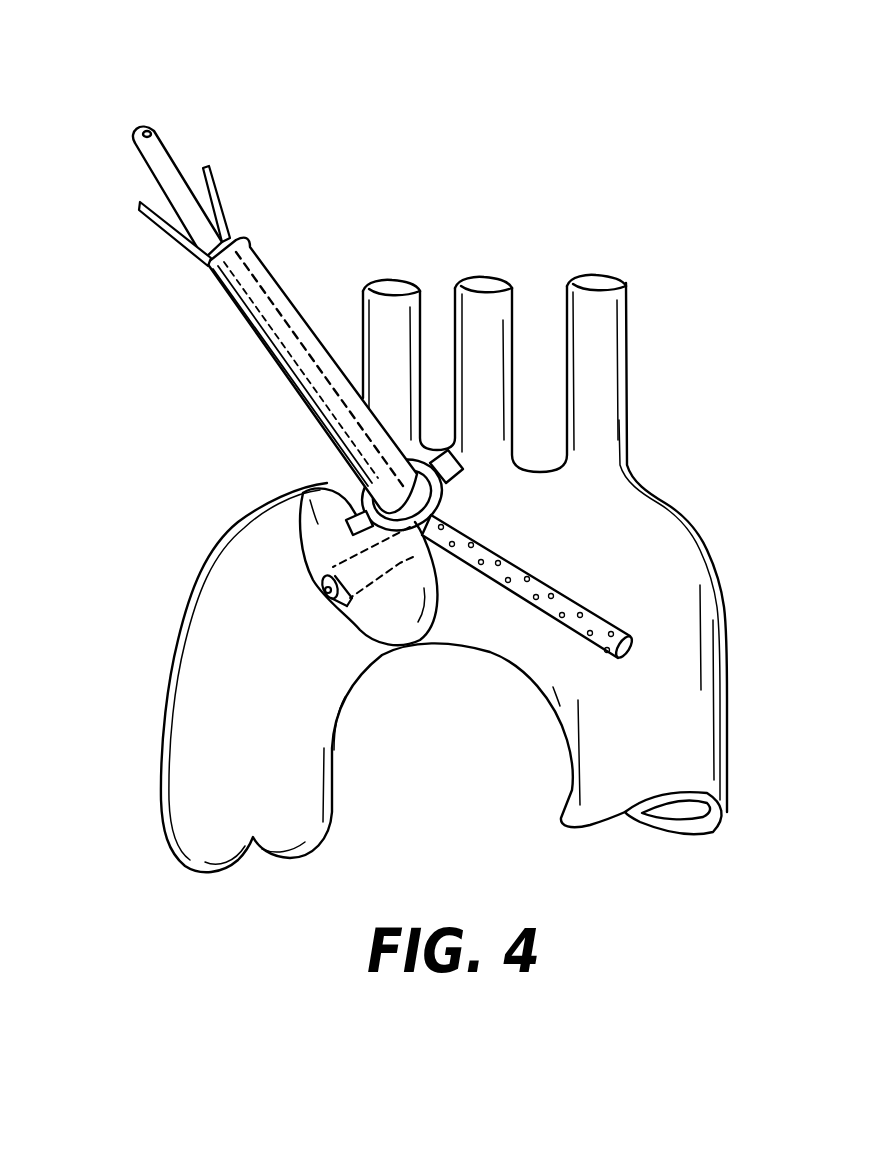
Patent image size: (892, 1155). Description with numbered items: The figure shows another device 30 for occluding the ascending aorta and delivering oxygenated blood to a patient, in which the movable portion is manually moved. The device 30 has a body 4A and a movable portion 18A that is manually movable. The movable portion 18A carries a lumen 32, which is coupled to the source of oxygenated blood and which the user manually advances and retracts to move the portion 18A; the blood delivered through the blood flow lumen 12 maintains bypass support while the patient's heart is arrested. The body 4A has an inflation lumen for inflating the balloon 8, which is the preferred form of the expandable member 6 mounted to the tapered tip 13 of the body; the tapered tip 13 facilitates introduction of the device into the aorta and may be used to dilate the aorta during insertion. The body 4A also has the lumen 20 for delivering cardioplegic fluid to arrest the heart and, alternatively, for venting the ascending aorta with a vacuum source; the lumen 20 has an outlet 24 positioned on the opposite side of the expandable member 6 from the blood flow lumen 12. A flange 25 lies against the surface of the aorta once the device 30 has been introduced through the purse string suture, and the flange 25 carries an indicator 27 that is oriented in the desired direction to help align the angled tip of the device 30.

The expandable member 6 is at (384, 652).
The inflatable balloon 8 is at (432, 640).
The blood flow lumen 12 is at (158, 213).
The tapered tip 13 is at (330, 551).
The movable portion 18A is at (563, 593).
The lumen 20 is at (212, 186).
The outlet 24 is at (325, 592).
The flange 25 is at (460, 484).
The indicator 27 is at (350, 518).
The device 30 is at (295, 268).
The lumen 32 is at (158, 147).
The body 4A is at (243, 330).